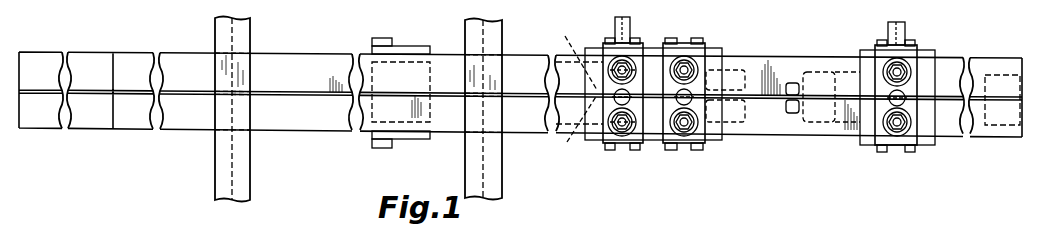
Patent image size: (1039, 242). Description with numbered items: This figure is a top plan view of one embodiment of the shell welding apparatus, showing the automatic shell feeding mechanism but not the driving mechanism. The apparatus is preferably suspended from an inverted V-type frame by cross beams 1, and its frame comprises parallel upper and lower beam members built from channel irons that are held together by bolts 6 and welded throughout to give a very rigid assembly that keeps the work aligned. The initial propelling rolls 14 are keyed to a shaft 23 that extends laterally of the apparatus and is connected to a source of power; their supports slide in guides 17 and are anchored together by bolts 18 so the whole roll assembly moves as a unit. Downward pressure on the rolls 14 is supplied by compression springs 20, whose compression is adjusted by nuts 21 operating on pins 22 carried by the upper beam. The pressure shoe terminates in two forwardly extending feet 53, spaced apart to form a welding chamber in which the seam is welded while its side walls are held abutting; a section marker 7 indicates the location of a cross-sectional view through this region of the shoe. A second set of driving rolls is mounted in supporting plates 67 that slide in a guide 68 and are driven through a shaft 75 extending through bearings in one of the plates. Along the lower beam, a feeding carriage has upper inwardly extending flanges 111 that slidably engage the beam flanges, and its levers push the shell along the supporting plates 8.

The cross beams 1 is at (237, 170).
The upper rolls 14 is at (757, 91).
The guides 17 is at (596, 140).
The bolts 18 is at (637, 150).
The compression springs 20 is at (700, 118).
The nuts 21 is at (684, 132).
The pins 22 is at (692, 120).
The shaft 23 is at (632, 30).
The forwardly extending feet 53 is at (722, 62).
The supporting plates 67 is at (897, 142).
The guide 68 is at (925, 142).
The shaft 75 is at (905, 35).
The upper inwardly extending flanges 111 is at (384, 124).
The bolts 6 is at (622, 226).
The section line 7 is at (686, 226).
The supporting plates 8 is at (866, 240).